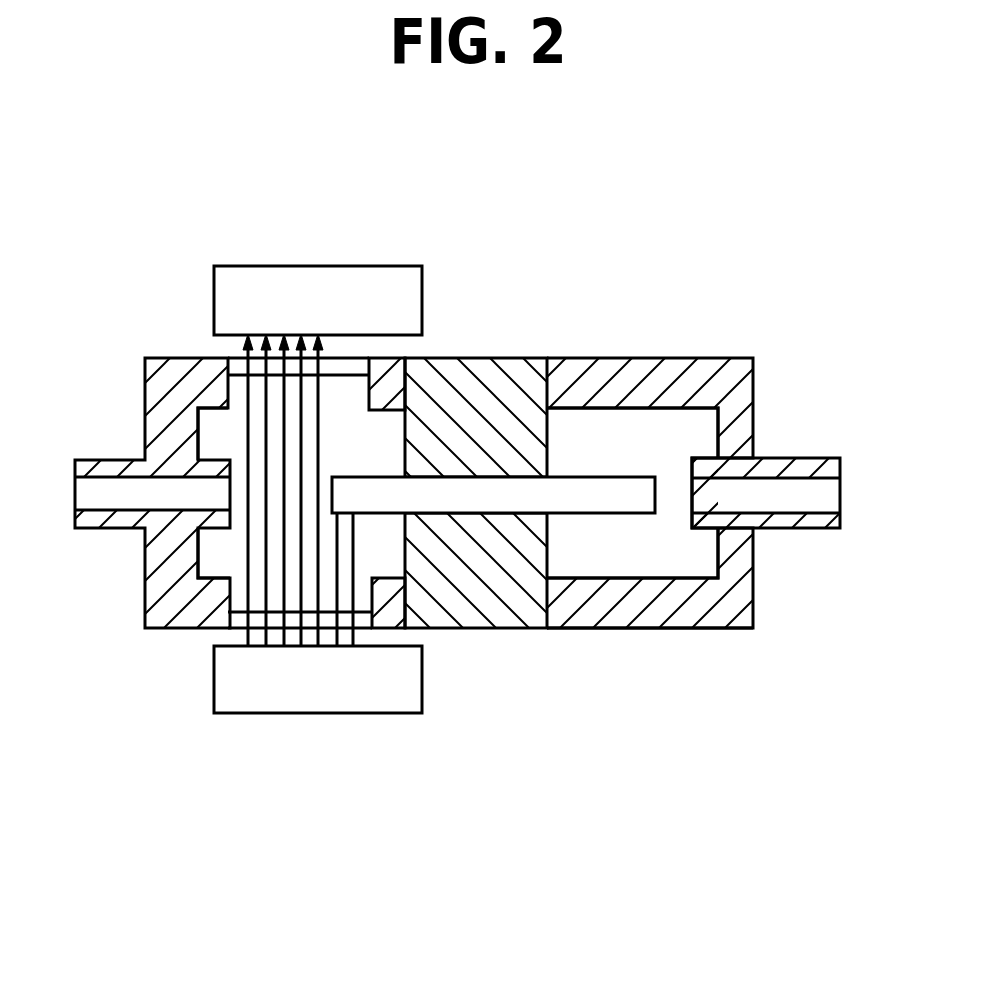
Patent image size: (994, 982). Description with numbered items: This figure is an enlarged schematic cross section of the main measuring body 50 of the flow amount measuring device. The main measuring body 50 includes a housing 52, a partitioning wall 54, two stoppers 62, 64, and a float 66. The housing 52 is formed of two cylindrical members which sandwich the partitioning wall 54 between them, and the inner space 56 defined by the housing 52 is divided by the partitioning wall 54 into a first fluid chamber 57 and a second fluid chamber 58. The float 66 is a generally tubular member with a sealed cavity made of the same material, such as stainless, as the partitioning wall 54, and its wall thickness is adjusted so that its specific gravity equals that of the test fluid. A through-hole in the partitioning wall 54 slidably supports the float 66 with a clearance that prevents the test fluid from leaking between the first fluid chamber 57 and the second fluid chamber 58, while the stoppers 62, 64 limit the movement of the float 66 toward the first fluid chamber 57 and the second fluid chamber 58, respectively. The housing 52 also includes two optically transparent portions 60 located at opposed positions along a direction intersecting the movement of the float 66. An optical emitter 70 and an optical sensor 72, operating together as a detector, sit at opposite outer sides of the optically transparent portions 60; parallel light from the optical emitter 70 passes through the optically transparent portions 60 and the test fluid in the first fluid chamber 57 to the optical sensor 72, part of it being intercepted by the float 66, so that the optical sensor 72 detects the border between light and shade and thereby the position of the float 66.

The main measuring body 50 is at (700, 630).
The housing 52 is at (668, 618).
The partitioning wall 54 is at (513, 613).
The inner space 56 is at (213, 433).
The first fluid chamber 57 is at (210, 447).
The second fluid chamber 58 is at (692, 550).
The optically transparent portions 60 is at (233, 358).
The stopper 62 is at (221, 530).
The stopper 64 is at (703, 467).
The float 66 is at (472, 498).
The optical emitter 70 is at (378, 713).
The optical sensor 72 is at (402, 266).